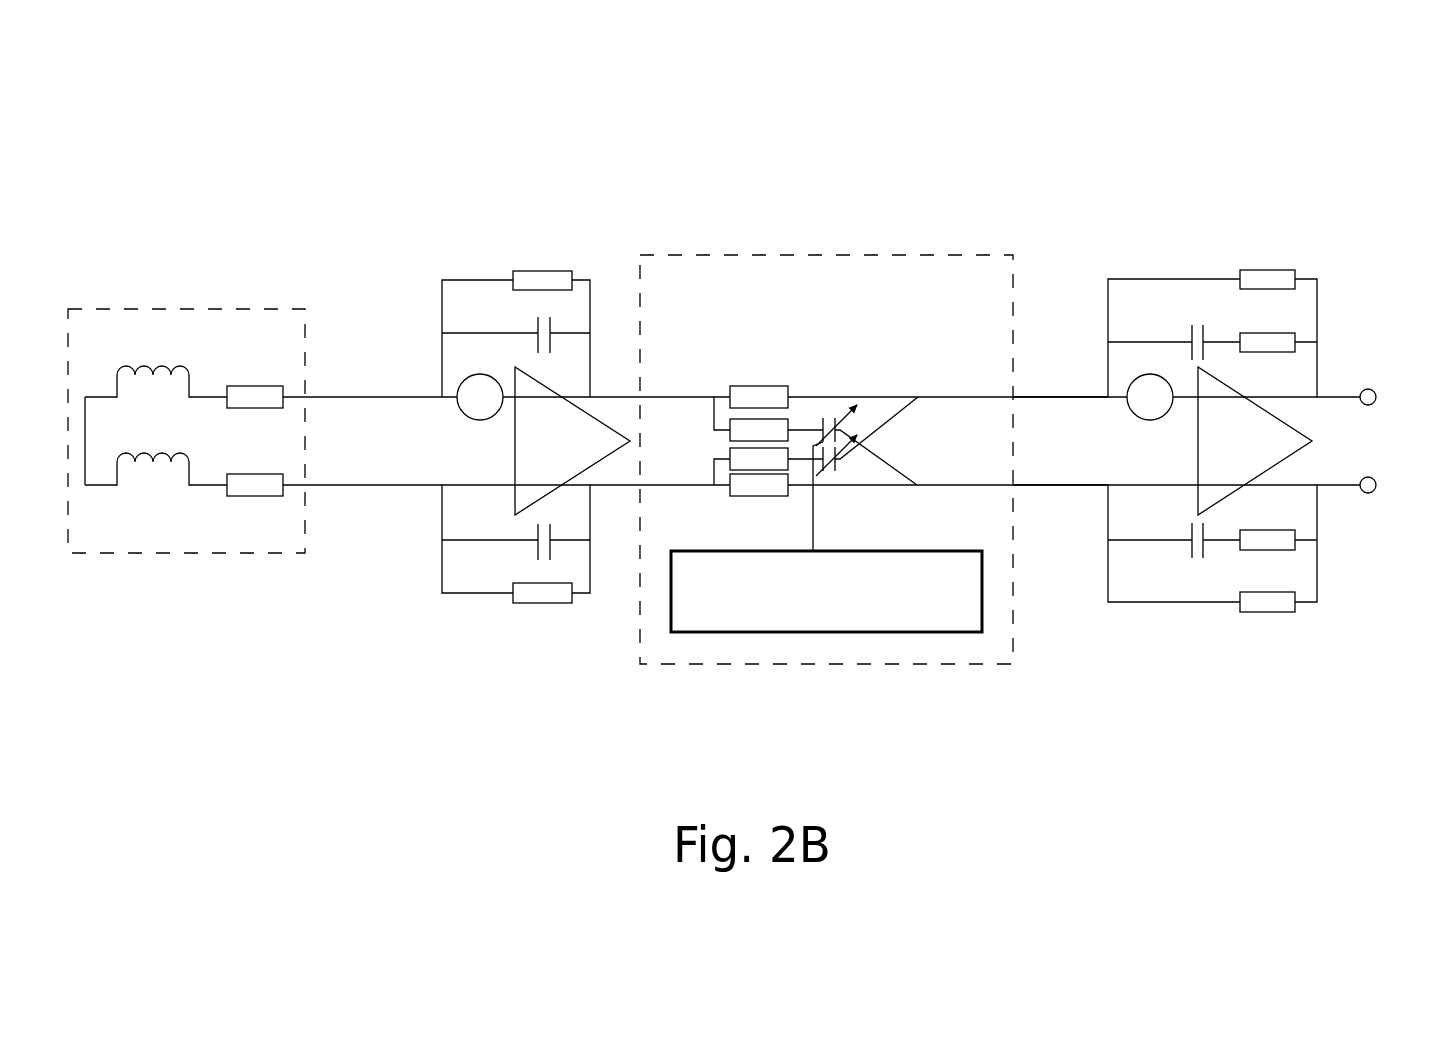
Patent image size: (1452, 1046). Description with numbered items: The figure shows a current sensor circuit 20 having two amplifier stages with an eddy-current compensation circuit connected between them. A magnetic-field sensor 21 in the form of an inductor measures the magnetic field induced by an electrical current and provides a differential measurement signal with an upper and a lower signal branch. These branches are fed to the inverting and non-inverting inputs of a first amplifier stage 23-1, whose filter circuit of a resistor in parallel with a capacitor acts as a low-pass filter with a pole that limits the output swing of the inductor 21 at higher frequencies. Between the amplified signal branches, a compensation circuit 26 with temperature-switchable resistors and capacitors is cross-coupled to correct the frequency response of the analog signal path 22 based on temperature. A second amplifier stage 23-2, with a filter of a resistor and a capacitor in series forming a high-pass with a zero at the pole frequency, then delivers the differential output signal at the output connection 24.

The current sensor circuit 20 is at (738, 125).
The magnetic-field sensor 21 is at (205, 308).
The analog signal path 22 is at (1027, 533).
The first amplifier stage 23-1 is at (500, 215).
The second amplifier stage 23-2 is at (1210, 213).
The output connection 24 is at (1370, 352).
The compensation circuit 26 is at (907, 255).